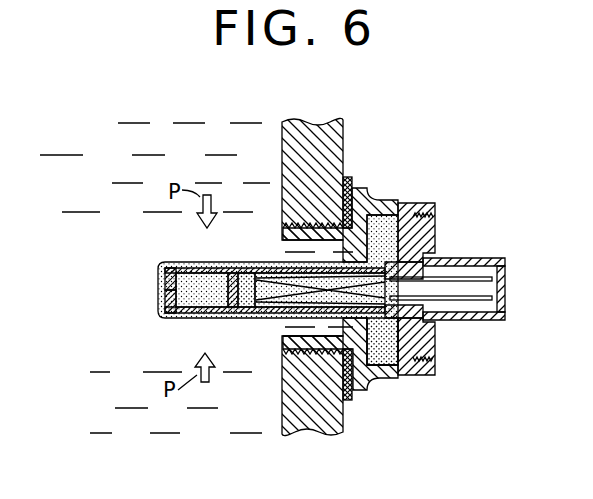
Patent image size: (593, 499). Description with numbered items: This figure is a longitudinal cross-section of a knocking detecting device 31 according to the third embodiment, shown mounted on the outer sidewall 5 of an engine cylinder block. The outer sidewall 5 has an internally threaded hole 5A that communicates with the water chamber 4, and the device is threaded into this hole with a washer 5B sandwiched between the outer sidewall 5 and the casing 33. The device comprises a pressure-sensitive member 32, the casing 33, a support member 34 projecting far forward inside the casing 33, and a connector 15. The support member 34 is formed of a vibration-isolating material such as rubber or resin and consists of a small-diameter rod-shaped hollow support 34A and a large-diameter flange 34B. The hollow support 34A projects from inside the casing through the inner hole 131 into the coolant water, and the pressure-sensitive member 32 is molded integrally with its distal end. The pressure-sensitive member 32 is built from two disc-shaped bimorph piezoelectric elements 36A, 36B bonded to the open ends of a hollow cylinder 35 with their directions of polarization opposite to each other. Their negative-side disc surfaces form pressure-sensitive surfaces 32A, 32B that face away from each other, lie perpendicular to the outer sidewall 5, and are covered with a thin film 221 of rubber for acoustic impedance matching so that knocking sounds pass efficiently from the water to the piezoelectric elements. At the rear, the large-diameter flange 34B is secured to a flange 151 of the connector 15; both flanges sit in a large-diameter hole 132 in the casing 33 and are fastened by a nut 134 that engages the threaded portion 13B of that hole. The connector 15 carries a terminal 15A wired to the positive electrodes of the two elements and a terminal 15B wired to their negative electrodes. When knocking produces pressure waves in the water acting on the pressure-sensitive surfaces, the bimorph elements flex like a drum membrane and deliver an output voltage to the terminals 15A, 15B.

The water chamber 4 is at (163, 143).
The outer sidewall 5 is at (306, 124).
The internally threaded hole 5A is at (282, 248).
The washer 5B is at (348, 178).
The threaded portion 13B is at (433, 360).
The connector 15 is at (475, 270).
The terminal 15A is at (493, 278).
The terminal 15B is at (493, 297).
The knocking detecting device 31 is at (472, 269).
The pressure-sensitive member 32 is at (247, 306).
The pressure-sensitive surface 32A is at (192, 262).
The pressure-sensitive surface 32B is at (188, 318).
The casing 33 is at (376, 203).
The support member 34 is at (372, 349).
The rod-shaped hollow support 34A is at (262, 313).
The large-diameter flange 34B is at (397, 364).
The hollow cylinder 35 is at (168, 285).
The bimorph piezoelectric element 36A is at (164, 267).
The bimorph piezoelectric element 36B is at (164, 317).
The inner hole 131 is at (284, 349).
The large-diameter hole 132 is at (410, 245).
The nut 134 is at (417, 343).
The flange 151 is at (426, 239).
The thin film 221 is at (207, 262).